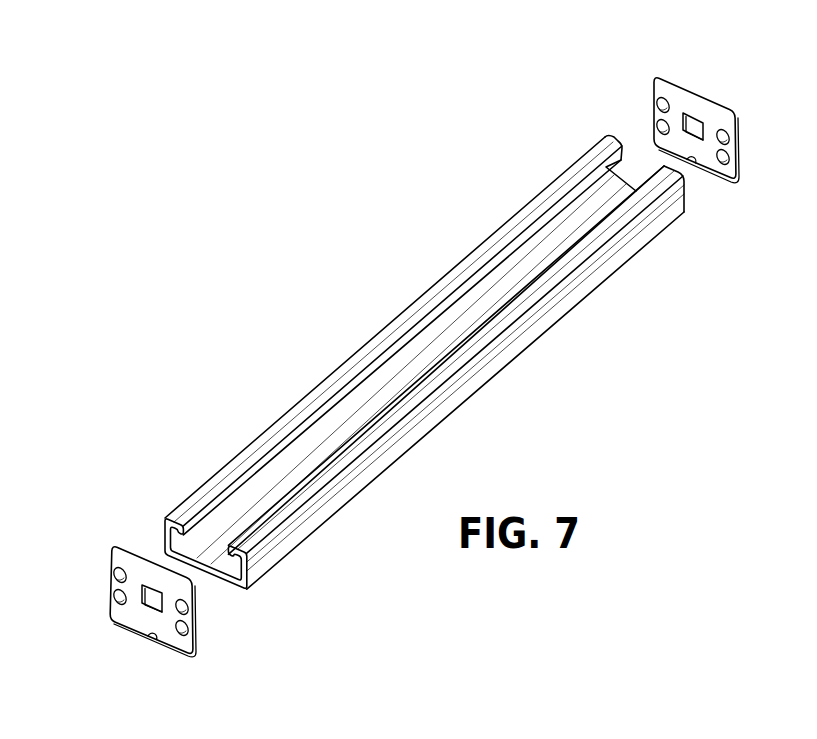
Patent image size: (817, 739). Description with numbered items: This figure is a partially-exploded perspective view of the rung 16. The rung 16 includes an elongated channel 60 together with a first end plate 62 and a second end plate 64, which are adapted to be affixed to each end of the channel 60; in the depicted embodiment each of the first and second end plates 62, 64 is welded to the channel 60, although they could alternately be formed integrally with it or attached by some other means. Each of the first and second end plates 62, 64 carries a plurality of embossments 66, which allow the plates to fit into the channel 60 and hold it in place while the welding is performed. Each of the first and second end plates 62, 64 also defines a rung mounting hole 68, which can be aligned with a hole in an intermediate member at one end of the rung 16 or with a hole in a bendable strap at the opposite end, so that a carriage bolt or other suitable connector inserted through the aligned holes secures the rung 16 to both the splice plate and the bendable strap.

The rung 16 is at (667, 400).
The channel 60 is at (390, 377).
The first end plate 62 is at (123, 617).
The second end plate 64 is at (705, 111).
The embossments 66 is at (660, 101).
The rung mounting hole 68 is at (683, 112).